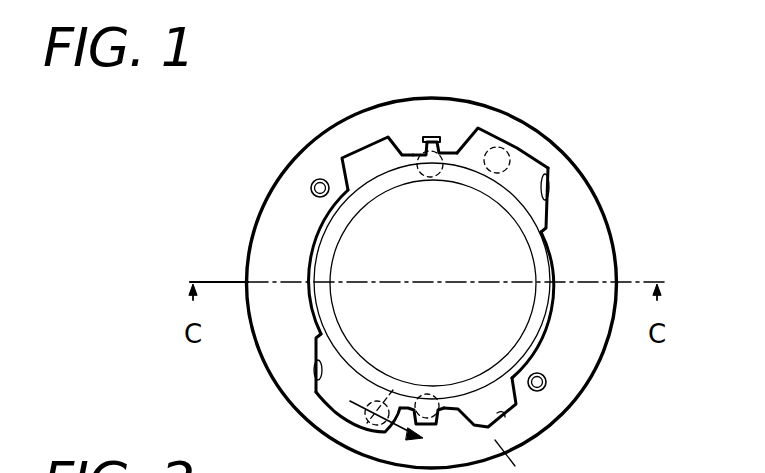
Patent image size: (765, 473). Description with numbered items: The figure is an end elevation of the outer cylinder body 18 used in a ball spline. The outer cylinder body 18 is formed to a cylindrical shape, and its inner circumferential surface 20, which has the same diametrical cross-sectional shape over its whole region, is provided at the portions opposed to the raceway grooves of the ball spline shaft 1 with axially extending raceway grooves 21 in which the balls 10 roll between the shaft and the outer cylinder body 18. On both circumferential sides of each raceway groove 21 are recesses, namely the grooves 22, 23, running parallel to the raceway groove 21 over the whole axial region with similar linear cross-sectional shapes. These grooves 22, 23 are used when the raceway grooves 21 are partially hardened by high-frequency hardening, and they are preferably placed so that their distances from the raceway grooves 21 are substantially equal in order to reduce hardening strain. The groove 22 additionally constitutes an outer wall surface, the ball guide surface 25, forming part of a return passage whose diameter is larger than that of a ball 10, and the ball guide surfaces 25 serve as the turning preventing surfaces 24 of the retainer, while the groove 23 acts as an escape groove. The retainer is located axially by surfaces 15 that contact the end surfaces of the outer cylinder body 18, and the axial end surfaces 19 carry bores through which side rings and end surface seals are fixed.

The ball spline shaft 1 is at (330, 262).
The ball 10 is at (406, 405).
The surface 15 is at (548, 185).
The outer cylinder body 18 is at (598, 240).
The axial end surface 19 is at (455, 110).
The inner circumferential surface 20 is at (316, 318).
The raceway groove 21 is at (426, 177).
The groove 22 is at (518, 142).
The groove 23 is at (357, 158).
The turning preventing surface 24 is at (477, 132).
The ball guide surface 25 is at (487, 132).